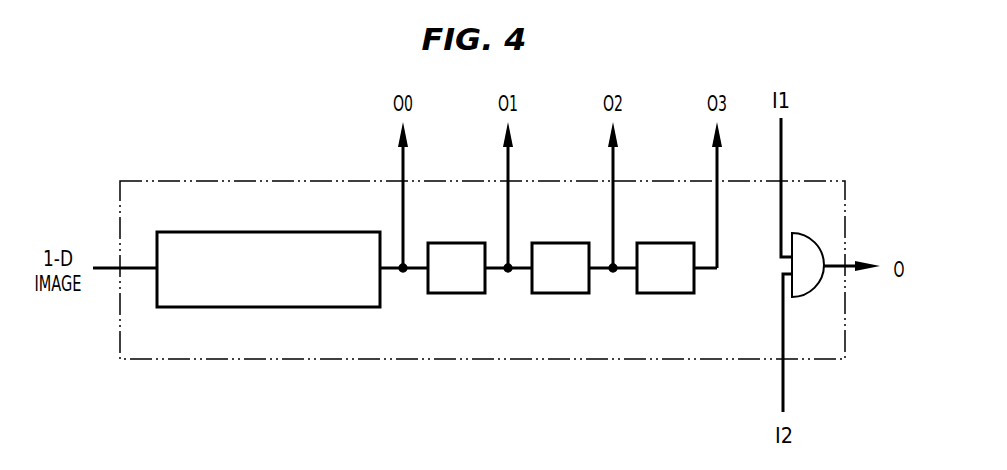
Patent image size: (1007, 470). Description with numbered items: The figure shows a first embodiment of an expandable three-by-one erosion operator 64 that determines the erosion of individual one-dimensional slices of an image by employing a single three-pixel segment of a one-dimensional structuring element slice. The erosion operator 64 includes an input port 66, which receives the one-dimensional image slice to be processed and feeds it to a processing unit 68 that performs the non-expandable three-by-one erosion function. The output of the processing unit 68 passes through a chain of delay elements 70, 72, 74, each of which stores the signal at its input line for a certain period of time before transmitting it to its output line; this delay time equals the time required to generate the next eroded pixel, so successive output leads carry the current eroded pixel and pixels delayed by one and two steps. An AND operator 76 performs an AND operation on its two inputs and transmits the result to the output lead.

The expandable 3×1 erosion operator 64 is at (182, 181).
The input port 66 is at (119, 268).
The processing unit 68 is at (312, 307).
The delay element 70 is at (467, 293).
The delay element 72 is at (574, 293).
The delay element 74 is at (677, 293).
The AND operator 76 is at (805, 236).